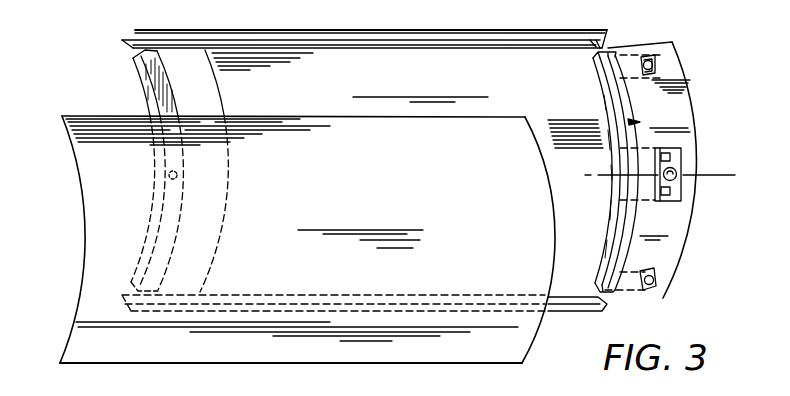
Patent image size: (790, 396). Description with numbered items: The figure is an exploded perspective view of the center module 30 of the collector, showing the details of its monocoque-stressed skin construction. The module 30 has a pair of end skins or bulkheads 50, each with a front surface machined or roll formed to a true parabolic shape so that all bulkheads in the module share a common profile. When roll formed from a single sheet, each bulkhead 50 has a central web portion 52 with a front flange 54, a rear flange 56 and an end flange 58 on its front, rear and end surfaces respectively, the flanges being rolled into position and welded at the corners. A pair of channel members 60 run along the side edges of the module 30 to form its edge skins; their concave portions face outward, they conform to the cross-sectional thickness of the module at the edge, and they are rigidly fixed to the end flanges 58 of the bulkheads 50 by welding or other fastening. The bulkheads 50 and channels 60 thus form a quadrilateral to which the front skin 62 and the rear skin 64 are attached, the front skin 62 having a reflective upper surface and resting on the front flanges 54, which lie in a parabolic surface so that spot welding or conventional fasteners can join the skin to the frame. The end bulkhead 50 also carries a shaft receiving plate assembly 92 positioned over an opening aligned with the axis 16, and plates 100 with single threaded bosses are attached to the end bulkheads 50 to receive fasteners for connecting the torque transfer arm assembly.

The centerline / axis 16 is at (716, 179).
The module 30 is at (687, 271).
The end skin or bulkhead 50 is at (146, 95).
The central web portion 52 is at (624, 238).
The front flange 54 is at (612, 216).
The rear flange 56 is at (633, 224).
The end flange 58 is at (598, 52).
The channel member 60 is at (451, 48).
The front skin 62 is at (85, 250).
The rear skin 64 is at (688, 77).
The shaft receiving plate assembly 92 is at (680, 166).
The plate 100 is at (651, 62).